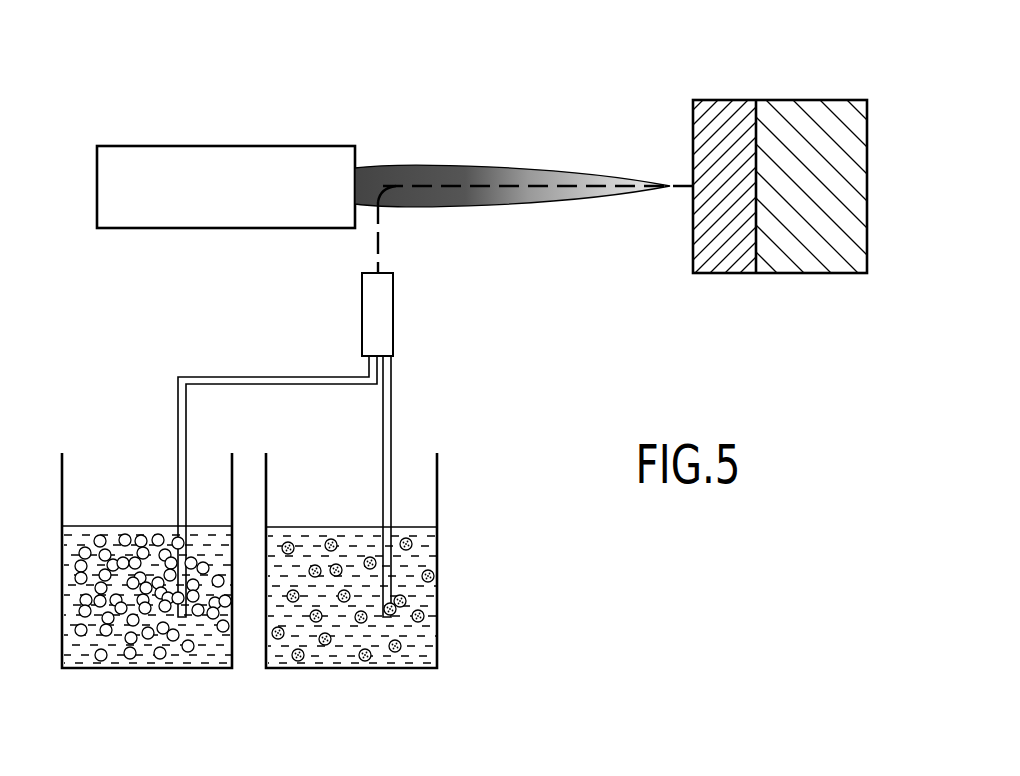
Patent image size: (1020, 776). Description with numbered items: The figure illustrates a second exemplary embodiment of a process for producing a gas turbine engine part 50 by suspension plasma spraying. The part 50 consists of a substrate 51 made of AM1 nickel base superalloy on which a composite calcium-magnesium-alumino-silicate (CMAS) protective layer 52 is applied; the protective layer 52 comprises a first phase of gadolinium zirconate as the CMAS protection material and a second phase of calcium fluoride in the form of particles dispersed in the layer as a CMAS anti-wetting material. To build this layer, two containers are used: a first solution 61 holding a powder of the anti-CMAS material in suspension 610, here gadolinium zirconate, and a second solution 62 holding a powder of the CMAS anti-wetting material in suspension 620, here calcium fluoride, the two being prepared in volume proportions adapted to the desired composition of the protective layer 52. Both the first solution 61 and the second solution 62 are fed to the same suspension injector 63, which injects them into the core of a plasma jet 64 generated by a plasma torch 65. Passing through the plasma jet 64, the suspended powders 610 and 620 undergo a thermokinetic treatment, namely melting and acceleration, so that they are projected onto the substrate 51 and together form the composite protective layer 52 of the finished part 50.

The gas turbine engine part 50 is at (780, 168).
The substrate 51 is at (798, 264).
The protective layer 52 is at (722, 264).
The first solution 61 is at (103, 520).
The powder of anti-CMAS material in suspension 610 is at (107, 636).
The second solution 62 is at (326, 520).
The powder of CMAS anti-wetting material in suspension 620 is at (344, 602).
The suspension injector 63 is at (383, 312).
The plasma jet 64 is at (517, 206).
The plasma torch 65 is at (209, 200).